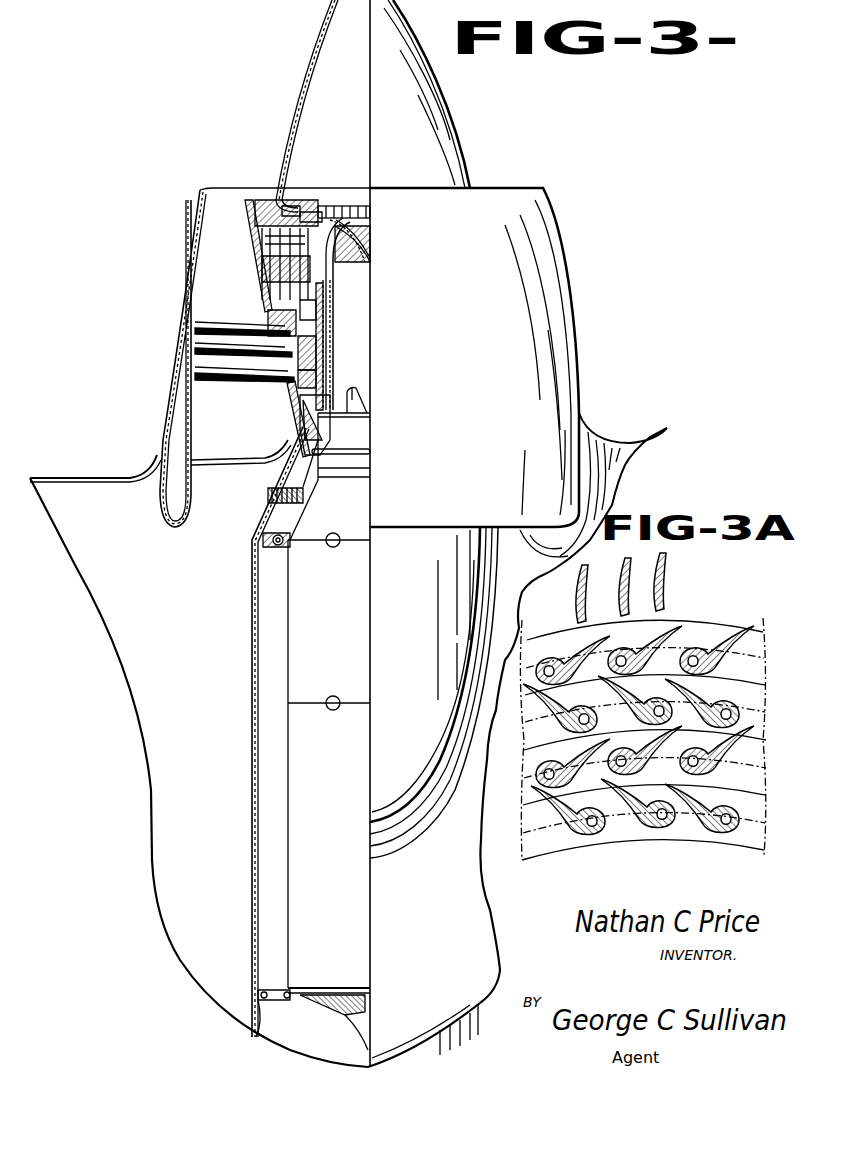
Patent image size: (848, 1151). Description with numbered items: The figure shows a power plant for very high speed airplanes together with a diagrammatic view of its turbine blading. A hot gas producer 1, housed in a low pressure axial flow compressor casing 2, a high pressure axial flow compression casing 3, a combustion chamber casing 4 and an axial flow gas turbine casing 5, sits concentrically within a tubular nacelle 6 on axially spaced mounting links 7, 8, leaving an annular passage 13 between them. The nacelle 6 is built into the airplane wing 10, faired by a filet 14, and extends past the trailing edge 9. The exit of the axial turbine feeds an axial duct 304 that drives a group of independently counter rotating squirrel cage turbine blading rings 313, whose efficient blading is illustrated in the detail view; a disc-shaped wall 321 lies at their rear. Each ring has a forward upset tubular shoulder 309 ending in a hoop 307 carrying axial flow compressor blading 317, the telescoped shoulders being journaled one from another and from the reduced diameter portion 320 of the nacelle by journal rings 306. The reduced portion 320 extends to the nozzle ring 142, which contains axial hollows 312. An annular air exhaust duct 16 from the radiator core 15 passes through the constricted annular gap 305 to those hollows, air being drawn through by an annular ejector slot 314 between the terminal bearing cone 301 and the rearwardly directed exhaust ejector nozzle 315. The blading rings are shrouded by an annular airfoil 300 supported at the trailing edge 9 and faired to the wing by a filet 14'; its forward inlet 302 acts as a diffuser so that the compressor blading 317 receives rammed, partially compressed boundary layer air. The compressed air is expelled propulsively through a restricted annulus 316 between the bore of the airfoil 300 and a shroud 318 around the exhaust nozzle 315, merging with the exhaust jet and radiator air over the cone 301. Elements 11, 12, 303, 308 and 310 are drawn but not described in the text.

In FIG. 3, the hot gas producer 1 is at (322, 660).
In FIG. 3, the low pressure axial flow compressor casing 2 is at (327, 888).
In FIG. 3, the high pressure axial flow compression casing 3 is at (290, 626).
In FIG. 3, the combustion chamber casing 4 is at (372, 502).
In FIG. 3, the axial flow gas turbine casing 5 is at (372, 443).
In FIG. 3, the tubular nacelle 6 is at (253, 700).
In FIG. 3, the mounting links 7 is at (272, 990).
In FIG. 3, the mounting links 8 is at (270, 548).
In FIG. 3, the trailing edge 9 is at (101, 478).
In FIG. 3, the airplane wing 10 is at (486, 891).
In FIG. 3, the exhaust nozzle vanes 11 is at (322, 1003).
In FIG. 3, the cowl end 12 is at (280, 1032).
In FIG. 3, the annular passage 13 is at (252, 806).
In FIG. 3, the filet 14 is at (434, 693).
In FIG. 3, the filet 14' is at (596, 493).
In FIG. 3, the radiator core 15 is at (270, 506).
In FIG. 3, the annular air exhaust duct 16 is at (282, 474).
In FIG. 3, the nozzle ring 142 is at (355, 236).
In FIG. 3A, the nozzle ring 142 is at (668, 828).
In FIG. 3, the annular airfoil 300 is at (580, 322).
In FIG. 3, the terminal bearing cone 301 is at (461, 122).
In FIG. 3, the forward inlet 302 is at (517, 528).
In FIG. 3, the shaft housing 303 is at (360, 414).
In FIG. 3, the axial duct 304 is at (352, 392).
In FIG. 3, the constricted annular gap 305 is at (334, 372).
In FIG. 3, the journal rings 306 is at (316, 350).
In FIG. 3, the hoop 307 is at (290, 388).
In FIG. 3, the bearing retainer 308 is at (316, 316).
In FIG. 3, the forward upset tubular shoulder 309 is at (334, 300).
In FIG. 3, the rotor hub 310 is at (268, 318).
In FIG. 3, the axial hollows 312 is at (350, 256).
In FIG. 3A, the axial hollows 312 is at (590, 830).
In FIG. 3, the turbine blading rings 313 is at (318, 206).
In FIG. 3A, the turbine blading rings 313 is at (730, 738).
In FIG. 3, the annular ejector slot 314 is at (286, 206).
In FIG. 3, the exhaust ejector nozzle 315 is at (258, 200).
In FIG. 3, the restricted annulus 316 is at (205, 196).
In FIG. 3, the axial flow compressor blading 317 is at (242, 375).
In FIG. 3, the shroud 318 is at (252, 262).
In FIG. 3, the reduced diameter portion 320 is at (323, 334).
In FIG. 3, the disc-shaped wall 321 is at (310, 203).